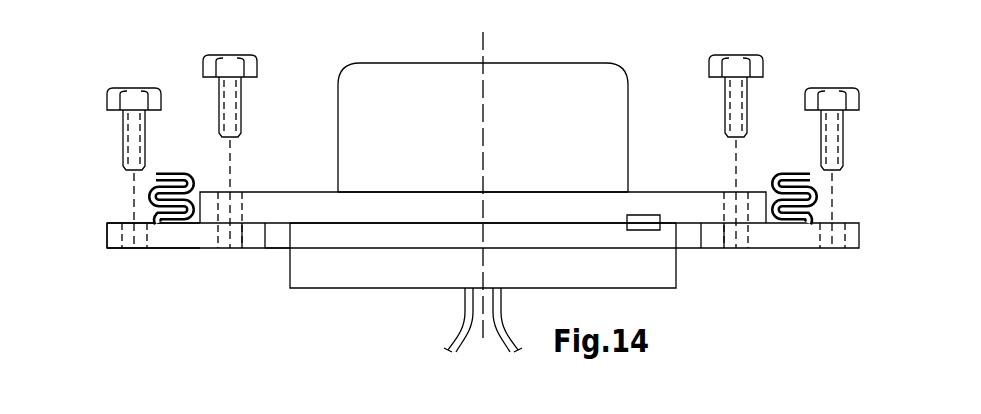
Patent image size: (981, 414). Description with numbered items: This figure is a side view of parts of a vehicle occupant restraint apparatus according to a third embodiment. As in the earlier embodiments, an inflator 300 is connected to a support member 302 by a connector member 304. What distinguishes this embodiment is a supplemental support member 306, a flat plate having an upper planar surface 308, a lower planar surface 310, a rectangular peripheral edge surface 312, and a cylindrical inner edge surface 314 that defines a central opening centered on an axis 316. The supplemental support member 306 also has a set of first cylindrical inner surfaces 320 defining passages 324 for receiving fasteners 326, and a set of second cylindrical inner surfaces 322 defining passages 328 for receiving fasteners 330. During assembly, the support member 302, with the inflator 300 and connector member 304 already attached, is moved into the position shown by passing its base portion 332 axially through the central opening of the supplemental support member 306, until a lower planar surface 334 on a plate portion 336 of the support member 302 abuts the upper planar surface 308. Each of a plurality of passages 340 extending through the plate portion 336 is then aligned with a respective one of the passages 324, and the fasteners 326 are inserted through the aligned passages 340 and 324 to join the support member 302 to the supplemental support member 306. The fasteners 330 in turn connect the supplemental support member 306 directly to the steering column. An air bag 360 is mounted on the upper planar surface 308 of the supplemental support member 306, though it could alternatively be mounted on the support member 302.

The inflator 300 is at (345, 60).
The support member 302 is at (208, 190).
The connector member 304 is at (626, 229).
The supplemental support member 306 is at (104, 233).
The upper planar surface 308 is at (115, 224).
The lower planar surface 310 is at (120, 250).
The rectangular peripheral edge surface 312 is at (105, 242).
The cylindrical inner edge surface 314 is at (277, 249).
The axis 316 is at (480, 88).
The first cylindrical inner surfaces 320 is at (236, 250).
The second cylindrical inner surfaces 322 is at (133, 251).
The passages 324 is at (228, 241).
The fasteners 326 is at (238, 68).
The passages 328 is at (141, 241).
The fasteners 330 is at (128, 95).
The base portion 332 is at (373, 265).
The lower planar surface 334 is at (358, 224).
The plate portion 336 is at (390, 192).
The passages 340 is at (234, 196).
The air bag 360 is at (162, 177).